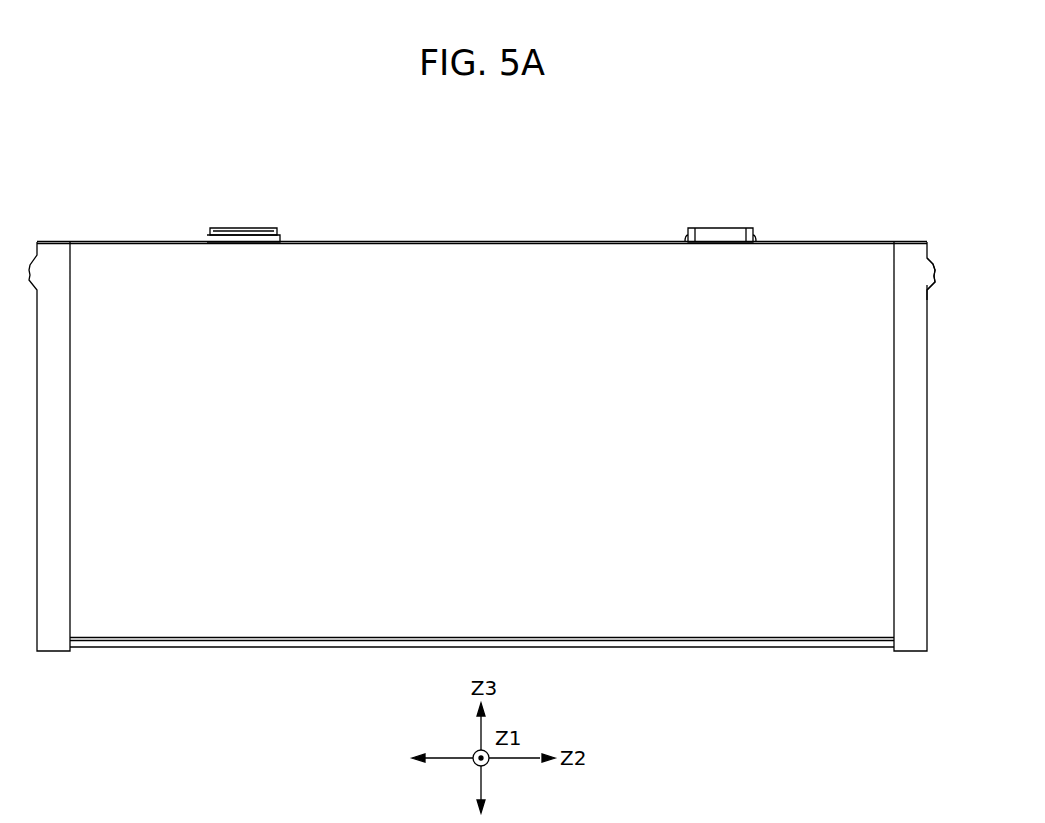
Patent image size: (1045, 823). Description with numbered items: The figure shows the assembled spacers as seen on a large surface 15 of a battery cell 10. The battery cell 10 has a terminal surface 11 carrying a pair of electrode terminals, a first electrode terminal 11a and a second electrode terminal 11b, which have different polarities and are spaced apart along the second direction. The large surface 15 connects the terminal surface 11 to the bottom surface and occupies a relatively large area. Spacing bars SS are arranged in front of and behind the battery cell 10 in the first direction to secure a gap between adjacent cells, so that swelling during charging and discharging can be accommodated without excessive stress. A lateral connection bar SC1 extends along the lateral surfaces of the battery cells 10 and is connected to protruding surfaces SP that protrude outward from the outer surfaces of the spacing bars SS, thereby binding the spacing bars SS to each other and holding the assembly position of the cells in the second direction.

The battery cell 10 is at (529, 418).
The terminal surface 11 is at (483, 242).
The first electrode terminal 11a is at (722, 228).
The second electrode terminal 11b is at (244, 228).
The large surface 15 is at (746, 582).
The lateral connection bar SC1 is at (937, 270).
The protruding surface SP is at (931, 283).
The spacing bar SS is at (922, 444).